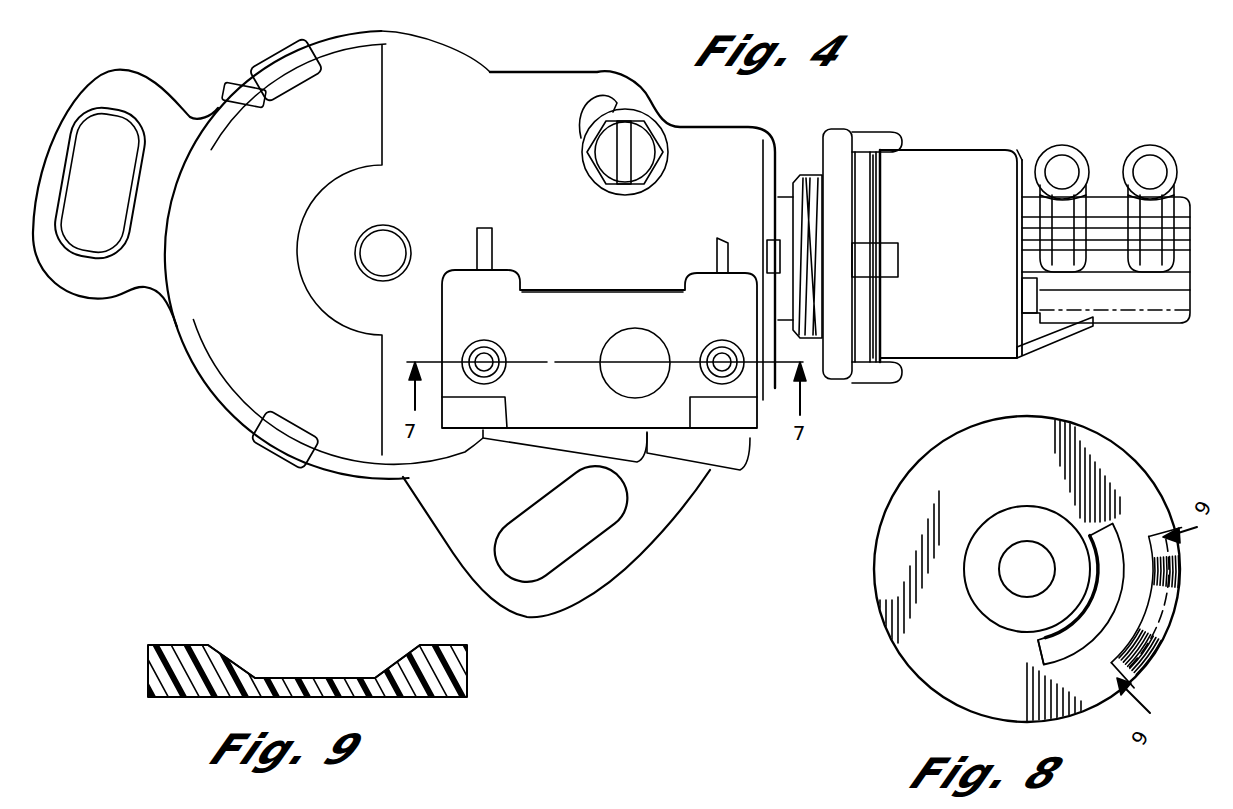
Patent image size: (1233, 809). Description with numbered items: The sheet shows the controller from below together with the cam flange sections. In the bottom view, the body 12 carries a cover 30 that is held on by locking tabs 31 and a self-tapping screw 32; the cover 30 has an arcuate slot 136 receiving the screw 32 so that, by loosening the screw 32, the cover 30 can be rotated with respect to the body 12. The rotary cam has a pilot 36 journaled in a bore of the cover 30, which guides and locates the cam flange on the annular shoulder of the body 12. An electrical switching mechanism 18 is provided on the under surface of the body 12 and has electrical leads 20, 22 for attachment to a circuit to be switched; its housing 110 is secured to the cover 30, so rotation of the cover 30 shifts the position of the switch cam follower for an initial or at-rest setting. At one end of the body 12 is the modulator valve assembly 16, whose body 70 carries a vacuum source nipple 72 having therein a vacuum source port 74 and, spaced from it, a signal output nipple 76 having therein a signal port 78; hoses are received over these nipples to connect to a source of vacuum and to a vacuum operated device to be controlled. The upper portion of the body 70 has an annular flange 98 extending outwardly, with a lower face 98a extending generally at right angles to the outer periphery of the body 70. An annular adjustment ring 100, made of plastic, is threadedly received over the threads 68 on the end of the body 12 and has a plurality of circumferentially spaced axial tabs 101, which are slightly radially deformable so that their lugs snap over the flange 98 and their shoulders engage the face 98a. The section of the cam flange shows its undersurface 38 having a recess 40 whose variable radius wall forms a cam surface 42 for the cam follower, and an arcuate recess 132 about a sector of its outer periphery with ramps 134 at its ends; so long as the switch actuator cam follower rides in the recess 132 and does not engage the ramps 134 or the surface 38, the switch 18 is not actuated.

In FIG. 4, the body 12 is at (185, 113).
In FIG. 4, the locking tabs 31 is at (310, 80).
In FIG. 4, the cover 30 is at (530, 92).
In FIG. 4, the pilot 36 is at (370, 235).
In FIG. 4, the self-tapping screw 32 is at (655, 137).
In FIG. 4, the arcuate slot 136 is at (605, 100).
In FIG. 4, the electrical switching mechanism 18 is at (573, 283).
In FIG. 4, the housing 110 is at (607, 290).
In FIG. 4, the electrical lead 20 is at (470, 235).
In FIG. 4, the electrical lead 22 is at (718, 250).
In FIG. 4, the threads 68 is at (802, 174).
In FIG. 4, the annular adjustment ring 100 is at (838, 129).
In FIG. 4, the axial tabs 101 is at (872, 131).
In FIG. 4, the annular flange 98 is at (857, 367).
In FIG. 4, the lower face 98a is at (880, 210).
In FIG. 4, the modulator valve assembly 16 is at (948, 148).
In FIG. 4, the signal output nipple 76 is at (1122, 200).
In FIG. 4, the vacuum source nipple 72 is at (1040, 236).
In FIG. 4, the vacuum source port 74 is at (1062, 160).
In FIG. 4, the signal port 78 is at (1150, 160).
In FIG. 4, the body 70 is at (975, 350).
In FIG. 8, the undersurface 38 is at (922, 650).
In FIG. 8, the recess 40 is at (1057, 648).
In FIG. 8, the cam surface 42 is at (1070, 652).
In FIG. 8, the arcuate recess 132 is at (1165, 628).
In FIG. 9, the arcuate recess 132 is at (305, 677).
In FIG. 8, the ramps 134 is at (1173, 590).
In FIG. 9, the ramps 134 is at (240, 668).